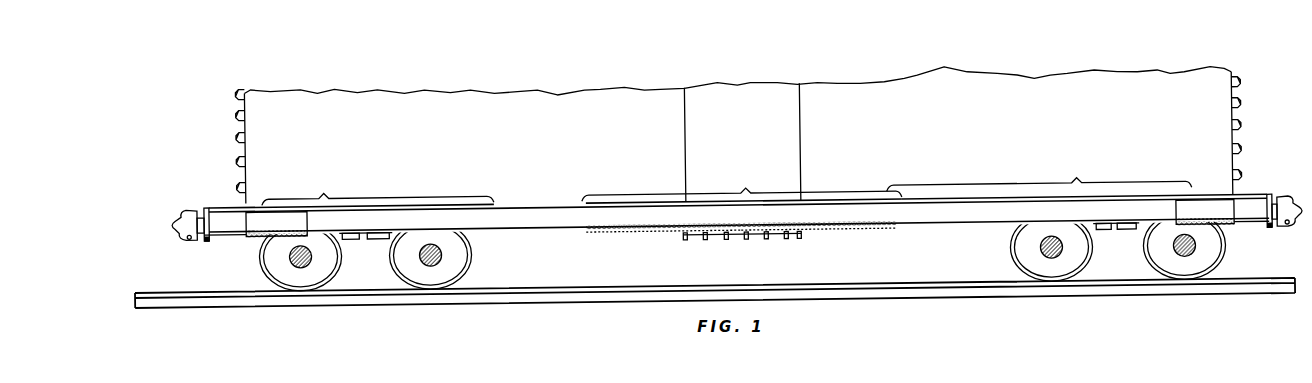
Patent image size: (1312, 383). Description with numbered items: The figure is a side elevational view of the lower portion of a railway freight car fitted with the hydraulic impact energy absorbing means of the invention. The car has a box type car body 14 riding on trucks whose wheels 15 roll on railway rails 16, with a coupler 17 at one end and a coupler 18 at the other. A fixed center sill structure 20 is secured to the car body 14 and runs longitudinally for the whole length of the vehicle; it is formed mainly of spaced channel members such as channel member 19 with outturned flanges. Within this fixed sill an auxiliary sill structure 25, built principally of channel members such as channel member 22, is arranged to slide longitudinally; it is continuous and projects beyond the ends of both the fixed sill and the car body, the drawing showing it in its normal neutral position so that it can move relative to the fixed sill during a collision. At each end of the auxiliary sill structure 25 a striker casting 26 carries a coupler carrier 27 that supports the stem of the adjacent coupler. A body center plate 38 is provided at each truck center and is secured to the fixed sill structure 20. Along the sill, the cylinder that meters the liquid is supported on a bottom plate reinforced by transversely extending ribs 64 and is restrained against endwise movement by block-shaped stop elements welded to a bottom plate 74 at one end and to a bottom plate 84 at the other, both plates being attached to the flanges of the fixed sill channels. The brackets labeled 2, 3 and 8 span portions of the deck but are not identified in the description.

The first deck section 2 is at (350, 190).
The intermediate deck section 3 is at (741, 184).
The second deck section 8 is at (1076, 177).
The car body 14 is at (590, 99).
The wheels 15 is at (401, 282).
The railway rails 16 is at (597, 294).
The coupler 17 is at (173, 225).
The coupler 18 is at (1292, 208).
The channel member 19 is at (499, 228).
The center sill structure 20 is at (550, 231).
The channel member 22 is at (238, 228).
The auxiliary sill structure 25 is at (230, 203).
The striker casting 26 is at (207, 208).
The coupler carrier 27 is at (207, 243).
The body center plate 38 is at (378, 243).
The transversely extending ribs 64 is at (738, 247).
The bottom plate 74 is at (635, 240).
The bottom plate 84 is at (850, 241).